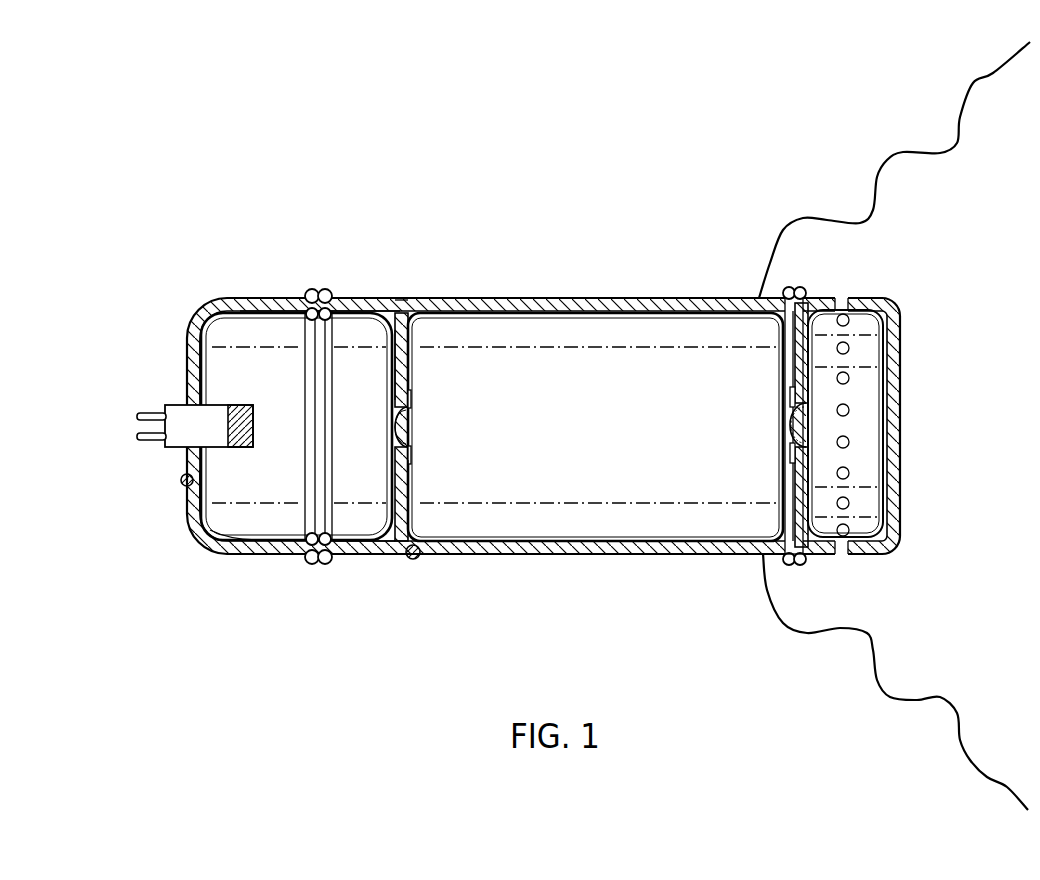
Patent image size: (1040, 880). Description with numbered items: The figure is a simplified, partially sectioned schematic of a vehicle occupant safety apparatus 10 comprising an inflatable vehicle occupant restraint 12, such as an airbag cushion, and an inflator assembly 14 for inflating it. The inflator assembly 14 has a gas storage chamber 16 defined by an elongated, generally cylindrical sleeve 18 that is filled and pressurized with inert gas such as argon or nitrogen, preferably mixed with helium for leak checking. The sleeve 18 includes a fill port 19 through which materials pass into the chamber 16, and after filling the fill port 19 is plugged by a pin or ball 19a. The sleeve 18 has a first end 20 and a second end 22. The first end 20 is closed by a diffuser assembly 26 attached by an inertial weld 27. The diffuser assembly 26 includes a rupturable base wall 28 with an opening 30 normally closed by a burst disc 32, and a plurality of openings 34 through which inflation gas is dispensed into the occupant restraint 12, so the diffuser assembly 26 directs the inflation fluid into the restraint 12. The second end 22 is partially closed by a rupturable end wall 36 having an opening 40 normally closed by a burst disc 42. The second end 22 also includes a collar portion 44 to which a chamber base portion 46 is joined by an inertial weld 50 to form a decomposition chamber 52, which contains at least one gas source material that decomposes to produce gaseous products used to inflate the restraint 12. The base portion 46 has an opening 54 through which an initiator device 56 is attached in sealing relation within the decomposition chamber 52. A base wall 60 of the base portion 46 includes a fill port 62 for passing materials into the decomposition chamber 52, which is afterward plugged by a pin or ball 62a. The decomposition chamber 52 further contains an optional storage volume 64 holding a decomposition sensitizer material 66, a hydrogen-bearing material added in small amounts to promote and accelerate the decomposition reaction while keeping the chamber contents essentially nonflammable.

The vehicle occupant safety apparatus 10 is at (575, 187).
The inflatable vehicle occupant restraint 12 is at (916, 150).
The inflator assembly 14 is at (481, 352).
The gas storage chamber 16 is at (647, 545).
The sleeve 18 is at (512, 548).
The fill port 19 is at (397, 553).
The pin or ball 19a is at (413, 560).
The first end 20 is at (780, 570).
The second end 22 is at (402, 283).
The diffuser assembly 26 is at (893, 290).
The inertial weld 27 is at (800, 288).
The rupturable base wall 28 is at (798, 480).
The opening 30 is at (795, 395).
The burst disc 32 is at (795, 422).
The openings 34 is at (850, 440).
The rupturable end wall 36 is at (405, 490).
The opening 40 is at (398, 415).
The burst disc 42 is at (405, 430).
The collar portion 44 is at (350, 555).
The chamber base portion 46 is at (262, 300).
The inertial weld 50 is at (310, 285).
The decomposition chamber 52 is at (238, 522).
The opening 54 is at (188, 405).
The initiator device 56 is at (172, 440).
The base wall 60 is at (188, 352).
The fill port 62 is at (190, 500).
The pin or ball 62a is at (182, 481).
The storage volume 64 is at (242, 410).
The decomposition sensitizer material 66 is at (243, 448).